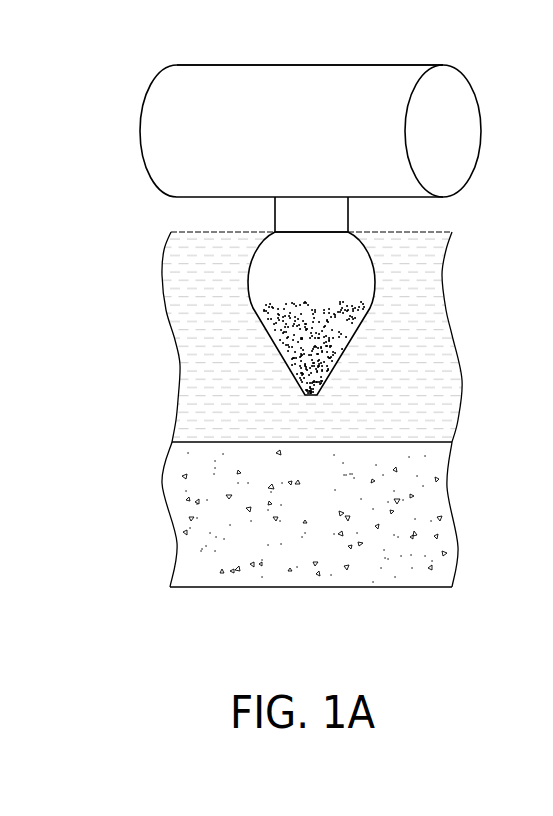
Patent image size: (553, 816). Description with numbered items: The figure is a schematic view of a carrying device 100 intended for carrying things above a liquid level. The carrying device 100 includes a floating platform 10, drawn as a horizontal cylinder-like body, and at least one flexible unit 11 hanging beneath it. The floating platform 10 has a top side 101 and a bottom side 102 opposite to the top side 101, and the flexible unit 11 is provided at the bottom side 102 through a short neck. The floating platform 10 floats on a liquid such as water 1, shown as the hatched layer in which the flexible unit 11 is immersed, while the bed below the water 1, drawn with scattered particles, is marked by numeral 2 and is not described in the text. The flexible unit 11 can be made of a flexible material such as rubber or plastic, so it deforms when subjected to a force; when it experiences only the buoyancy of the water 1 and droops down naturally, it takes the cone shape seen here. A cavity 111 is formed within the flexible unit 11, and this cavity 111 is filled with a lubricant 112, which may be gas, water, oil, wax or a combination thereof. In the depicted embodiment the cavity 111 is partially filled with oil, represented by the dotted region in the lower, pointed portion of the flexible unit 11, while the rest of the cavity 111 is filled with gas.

The water 1 is at (188, 373).
The seabed / ground 2 is at (192, 483).
The carrying device 100 is at (346, 201).
The floating platform 10 is at (319, 114).
The top side 101 is at (312, 65).
The bottom side 102 is at (276, 232).
The flexible unit 11 is at (379, 313).
The cavity 111 is at (362, 285).
The lubricant 112 is at (340, 325).